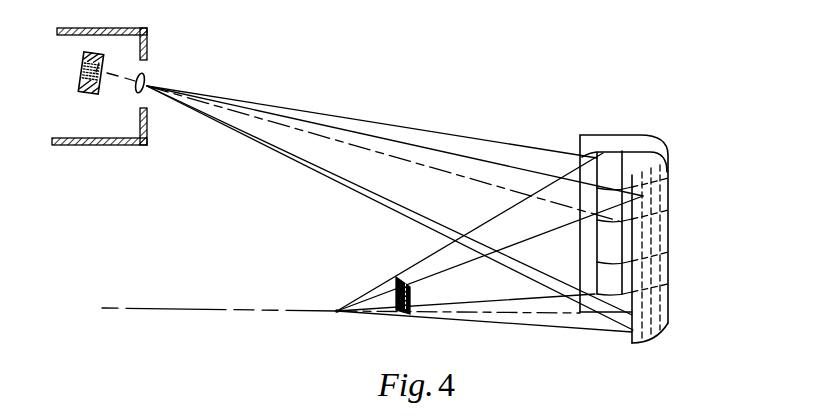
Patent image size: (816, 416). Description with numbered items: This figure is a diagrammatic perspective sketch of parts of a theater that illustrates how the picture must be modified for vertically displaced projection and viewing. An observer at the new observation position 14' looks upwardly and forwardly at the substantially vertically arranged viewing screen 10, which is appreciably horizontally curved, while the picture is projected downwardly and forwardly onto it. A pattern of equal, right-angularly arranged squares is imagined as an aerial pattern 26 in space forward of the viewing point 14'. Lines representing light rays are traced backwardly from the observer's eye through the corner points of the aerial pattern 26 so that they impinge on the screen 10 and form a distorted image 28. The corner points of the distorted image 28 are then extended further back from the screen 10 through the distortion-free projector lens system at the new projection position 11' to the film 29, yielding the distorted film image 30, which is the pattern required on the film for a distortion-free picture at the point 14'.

The viewing screen 10 is at (605, 134).
The projection position 11' is at (165, 63).
The observation position 14' is at (372, 253).
The aerial pattern 26 is at (413, 302).
The distorted image 28 is at (648, 148).
The film 29 is at (88, 94).
The distorted film image 30 is at (99, 63).